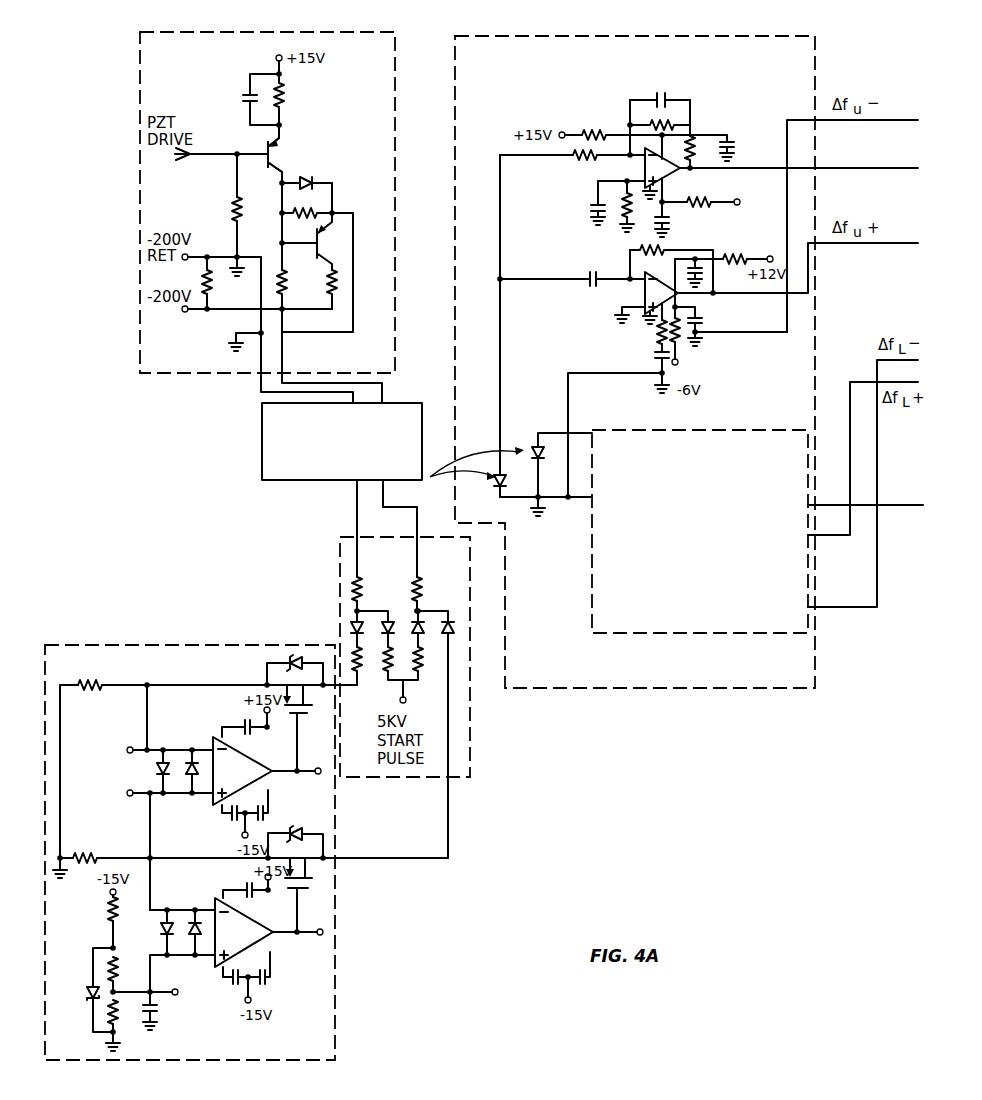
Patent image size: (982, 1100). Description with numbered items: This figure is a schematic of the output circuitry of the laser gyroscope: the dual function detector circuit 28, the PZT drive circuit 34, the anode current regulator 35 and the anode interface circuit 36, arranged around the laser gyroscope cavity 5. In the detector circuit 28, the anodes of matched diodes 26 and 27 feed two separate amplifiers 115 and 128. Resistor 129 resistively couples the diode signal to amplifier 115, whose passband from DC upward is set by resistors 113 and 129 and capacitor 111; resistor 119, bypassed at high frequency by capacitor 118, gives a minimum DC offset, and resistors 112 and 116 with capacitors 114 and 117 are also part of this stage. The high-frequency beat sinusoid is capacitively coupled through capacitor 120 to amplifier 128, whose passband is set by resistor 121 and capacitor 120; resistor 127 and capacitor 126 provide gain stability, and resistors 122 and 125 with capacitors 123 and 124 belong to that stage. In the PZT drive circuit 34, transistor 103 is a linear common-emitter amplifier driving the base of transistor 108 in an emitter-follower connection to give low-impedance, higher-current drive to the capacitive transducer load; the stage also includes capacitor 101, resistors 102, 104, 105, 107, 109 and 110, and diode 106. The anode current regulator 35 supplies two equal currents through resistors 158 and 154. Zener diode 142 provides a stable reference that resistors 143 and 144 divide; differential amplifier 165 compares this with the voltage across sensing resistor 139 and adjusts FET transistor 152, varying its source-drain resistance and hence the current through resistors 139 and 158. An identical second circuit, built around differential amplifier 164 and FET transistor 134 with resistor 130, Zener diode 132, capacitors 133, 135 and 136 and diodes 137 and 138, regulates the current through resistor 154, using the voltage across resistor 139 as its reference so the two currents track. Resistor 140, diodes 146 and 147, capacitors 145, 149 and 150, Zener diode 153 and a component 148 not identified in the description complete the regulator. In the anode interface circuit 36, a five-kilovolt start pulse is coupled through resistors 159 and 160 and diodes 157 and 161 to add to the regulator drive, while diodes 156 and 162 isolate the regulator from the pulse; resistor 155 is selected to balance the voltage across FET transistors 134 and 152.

The laser gyroscope cavity 5 is at (300, 482).
The diode 26 is at (498, 488).
The diode 27 is at (535, 449).
The dual function detector circuit 28 is at (635, 347).
The PZT drive circuit 34 is at (267, 189).
The anode current regulator 35 is at (337, 1058).
The anode interface circuit 36 is at (471, 772).
The capacitor 101 is at (240, 90).
The resistor 102 is at (290, 99).
The transistor 103 is at (266, 148).
The resistor 104 is at (232, 207).
The resistor 105 is at (212, 290).
The diode 106 is at (305, 176).
The resistor 107 is at (316, 212).
The transistor 108 is at (335, 241).
The resistor 109 is at (336, 288).
The resistor 110 is at (287, 280).
The capacitor 111 is at (663, 93).
The resistor 112 is at (603, 130).
The resistor 113 is at (672, 124).
The capacitor 114 is at (740, 140).
The amplifier 115 is at (677, 177).
The resistor 116 is at (694, 206).
The capacitor 117 is at (668, 222).
The capacitor 118 is at (592, 205).
The resistor 119 is at (625, 195).
The capacitor 120 is at (591, 285).
The resistor 121 is at (640, 250).
The resistor 122 is at (742, 257).
The capacitor 123 is at (703, 275).
The capacitor 124 is at (701, 330).
The resistor 125 is at (680, 345).
The capacitor 126 is at (655, 358).
The resistor 127 is at (656, 332).
The amplifier 128 is at (645, 298).
The resistor 129 is at (578, 158).
The resistor 130 is at (103, 672).
The Zener diode 132 is at (288, 660).
The capacitor 133 is at (242, 723).
The FET transistor 134 is at (308, 707).
The capacitor 135 is at (270, 810).
The capacitor 136 is at (232, 822).
The diode 137 is at (191, 786).
The diode 138 is at (157, 770).
The resistor 139 is at (90, 856).
The resistor 140 is at (110, 914).
The Zener diode 142 is at (90, 992).
The resistor 143 is at (118, 970).
The resistor 144 is at (110, 1003).
The capacitor 145 is at (158, 1010).
The diode 146 is at (168, 920).
The diode 147 is at (202, 936).
The capacitor 148 is at (248, 882).
The capacitor 149 is at (236, 985).
The capacitor 150 is at (266, 985).
The FET transistor 152 is at (308, 890).
The Zener diode 153 is at (294, 828).
The resistor 154 is at (362, 578).
The resistor 155 is at (354, 672).
The diode 156 is at (350, 628).
The diode 157 is at (393, 621).
The resistor 158 is at (422, 578).
The resistor 159 is at (386, 670).
The resistor 160 is at (424, 670).
The diode 161 is at (426, 630).
The diode 162 is at (455, 621).
The differential amplifier 164 is at (242, 771).
The differential amplifier 165 is at (244, 932).